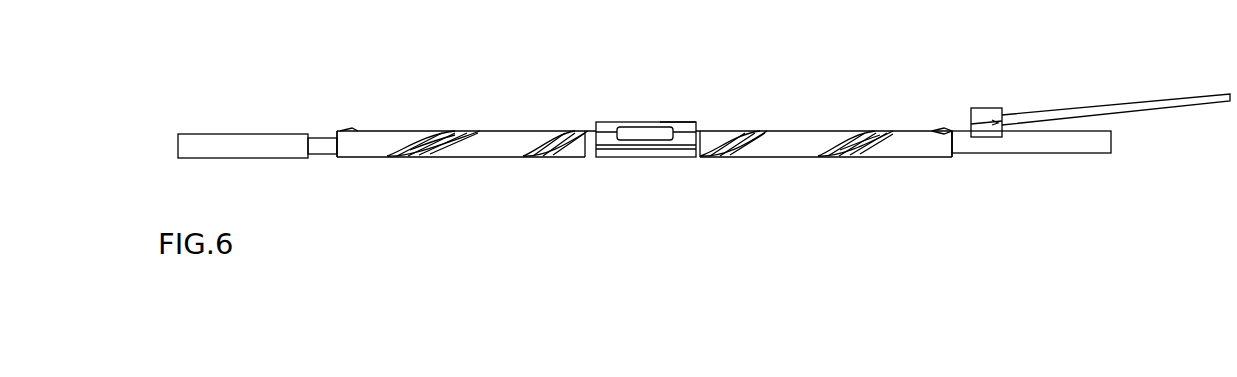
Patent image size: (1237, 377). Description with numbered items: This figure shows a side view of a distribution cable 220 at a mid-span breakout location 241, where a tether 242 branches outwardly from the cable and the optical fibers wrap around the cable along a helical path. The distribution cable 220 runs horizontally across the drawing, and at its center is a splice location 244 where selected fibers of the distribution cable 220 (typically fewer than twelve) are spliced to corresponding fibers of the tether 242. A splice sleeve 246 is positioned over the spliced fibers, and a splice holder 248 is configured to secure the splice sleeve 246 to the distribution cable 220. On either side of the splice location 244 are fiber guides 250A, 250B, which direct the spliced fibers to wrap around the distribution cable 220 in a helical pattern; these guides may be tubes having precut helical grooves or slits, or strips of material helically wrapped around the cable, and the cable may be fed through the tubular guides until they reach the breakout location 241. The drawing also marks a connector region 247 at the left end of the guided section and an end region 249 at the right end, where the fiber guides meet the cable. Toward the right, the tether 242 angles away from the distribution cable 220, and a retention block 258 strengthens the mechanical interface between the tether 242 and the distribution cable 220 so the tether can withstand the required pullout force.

The distribution cable 220 is at (199, 138).
The mid-span breakout location 241 is at (305, 113).
The tether 242 is at (1170, 104).
The splice location 244 is at (622, 110).
The splice sleeve 246 is at (646, 140).
The connector 247 is at (320, 158).
The splice holder 248 is at (683, 122).
The second end of shaft 249 is at (943, 122).
The fiber guide 250A is at (480, 150).
The fiber guide 250B is at (797, 148).
The retention block 258 is at (995, 112).